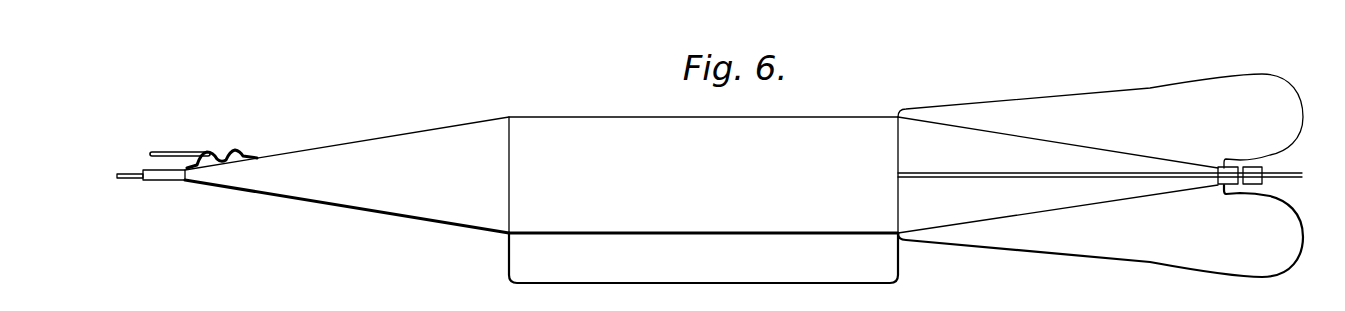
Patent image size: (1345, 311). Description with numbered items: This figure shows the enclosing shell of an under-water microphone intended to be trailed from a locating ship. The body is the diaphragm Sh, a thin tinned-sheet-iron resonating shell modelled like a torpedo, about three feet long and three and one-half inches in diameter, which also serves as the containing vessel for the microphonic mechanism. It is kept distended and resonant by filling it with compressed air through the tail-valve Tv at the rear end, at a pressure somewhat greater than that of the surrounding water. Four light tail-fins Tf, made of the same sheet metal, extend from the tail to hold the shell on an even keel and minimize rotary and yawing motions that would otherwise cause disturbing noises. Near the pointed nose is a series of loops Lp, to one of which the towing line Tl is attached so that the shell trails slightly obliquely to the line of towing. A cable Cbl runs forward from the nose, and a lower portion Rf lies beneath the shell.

The cable Cbl is at (131, 181).
The towing line Tl is at (163, 152).
The loops Lp is at (230, 133).
The diaphragm shell Sh is at (541, 175).
The rudder fin / lower shell portion Rf is at (848, 272).
The tail-fins Tf is at (1061, 118).
The tail-valve Tv is at (1258, 180).